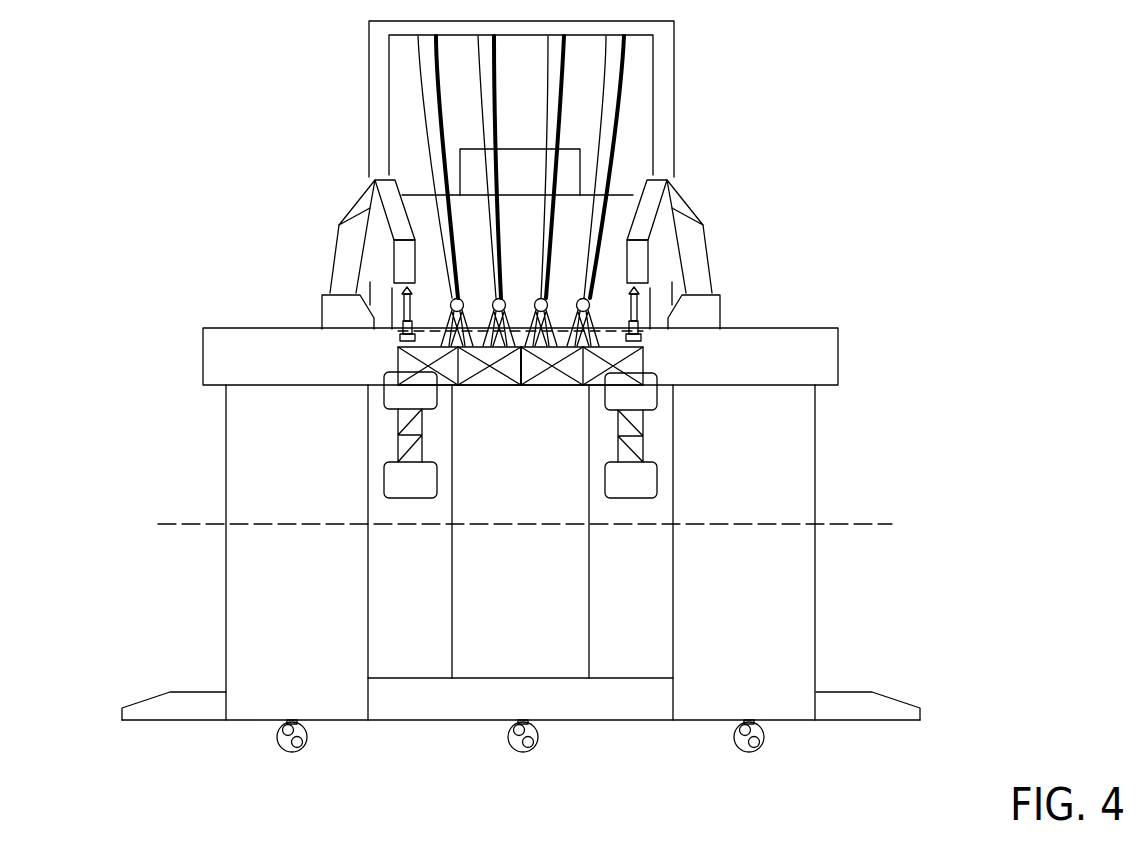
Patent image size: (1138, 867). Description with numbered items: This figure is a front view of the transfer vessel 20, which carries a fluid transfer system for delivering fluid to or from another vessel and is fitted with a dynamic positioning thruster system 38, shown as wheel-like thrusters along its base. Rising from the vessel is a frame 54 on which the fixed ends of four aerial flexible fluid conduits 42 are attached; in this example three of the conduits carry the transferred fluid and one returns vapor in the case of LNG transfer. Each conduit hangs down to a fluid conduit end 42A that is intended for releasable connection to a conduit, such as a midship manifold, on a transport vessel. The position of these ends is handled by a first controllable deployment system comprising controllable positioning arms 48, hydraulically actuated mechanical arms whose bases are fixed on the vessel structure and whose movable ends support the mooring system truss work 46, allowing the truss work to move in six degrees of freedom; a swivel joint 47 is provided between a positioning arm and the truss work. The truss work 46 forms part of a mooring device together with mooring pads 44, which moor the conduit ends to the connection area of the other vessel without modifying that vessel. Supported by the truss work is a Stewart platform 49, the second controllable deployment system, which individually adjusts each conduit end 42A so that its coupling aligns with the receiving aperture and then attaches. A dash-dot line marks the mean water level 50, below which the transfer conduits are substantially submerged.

The transfer vessel 20 is at (226, 450).
The dynamic positioning thruster system 38 is at (508, 742).
The aerial flexible fluid conduit 42 is at (613, 122).
The fluid conduit end 42A is at (452, 299).
The mooring pads 44 is at (605, 405).
The structural supports / mooring system truss work 46 is at (560, 388).
The swivel joint 47 is at (640, 309).
The controllable positioning arm 48 is at (706, 243).
The Stewart platform 49 is at (401, 336).
The mean water level 50 is at (856, 524).
The frame 54 is at (368, 127).